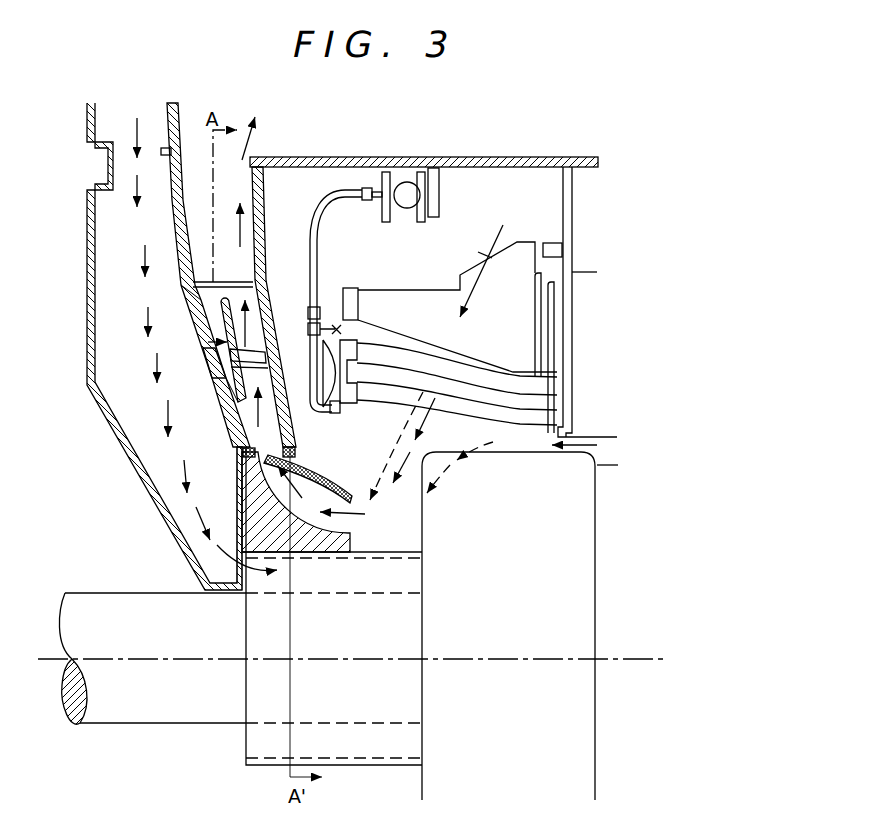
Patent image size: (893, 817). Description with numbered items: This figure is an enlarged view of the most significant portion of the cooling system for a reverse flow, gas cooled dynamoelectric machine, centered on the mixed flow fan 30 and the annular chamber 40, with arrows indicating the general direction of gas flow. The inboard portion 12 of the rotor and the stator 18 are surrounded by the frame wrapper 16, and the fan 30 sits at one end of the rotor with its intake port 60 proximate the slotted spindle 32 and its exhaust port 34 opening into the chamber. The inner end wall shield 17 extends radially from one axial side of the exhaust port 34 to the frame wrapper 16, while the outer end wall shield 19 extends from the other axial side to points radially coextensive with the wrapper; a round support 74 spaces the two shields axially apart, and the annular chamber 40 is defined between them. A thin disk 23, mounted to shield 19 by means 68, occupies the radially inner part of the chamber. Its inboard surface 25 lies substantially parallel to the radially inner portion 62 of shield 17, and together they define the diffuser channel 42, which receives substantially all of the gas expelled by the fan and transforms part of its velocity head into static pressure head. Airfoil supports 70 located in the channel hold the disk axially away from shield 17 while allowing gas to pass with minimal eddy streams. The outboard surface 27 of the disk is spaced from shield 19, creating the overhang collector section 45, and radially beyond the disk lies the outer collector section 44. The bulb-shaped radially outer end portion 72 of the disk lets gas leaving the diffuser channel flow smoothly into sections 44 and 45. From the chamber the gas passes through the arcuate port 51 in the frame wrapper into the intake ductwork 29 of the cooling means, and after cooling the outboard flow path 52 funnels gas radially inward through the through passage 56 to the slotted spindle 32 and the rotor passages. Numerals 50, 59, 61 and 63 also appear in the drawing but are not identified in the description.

The inboard portion of the rotor 12 is at (515, 564).
The frame wrapper 16 is at (463, 157).
The inner end wall shield 17 is at (264, 268).
The stator 18 is at (601, 360).
The outer end wall shield 19 is at (180, 293).
The disk 23 is at (205, 345).
The inboard surface 25 is at (270, 367).
The outboard surface 27 is at (232, 362).
The intake ductwork 29 is at (178, 128).
The mixed flow fan 30 is at (320, 488).
The slotted spindle 32 is at (372, 552).
The fan exhaust port 34 is at (300, 463).
The annular chamber 40 is at (247, 280).
The diffuser channel 42 is at (240, 390).
The outer collector section 44 is at (243, 202).
The overhang collector section 45 is at (204, 339).
The plenum chamber 50 is at (326, 135).
The arcuate port 51 is at (218, 168).
The outboard flow path 52 is at (116, 113).
The through passage 56 is at (120, 253).
The fuel supply line 59 is at (303, 313).
The intake port 60 is at (366, 513).
The seal 61 is at (296, 451).
The radially inner portion of inner shield 62 is at (273, 415).
The baffle plate 63 is at (243, 465).
The mounting means 68 is at (237, 403).
The airfoil support 70 is at (262, 348).
The radially outer end portion 72 is at (239, 314).
The round support 74 is at (203, 280).